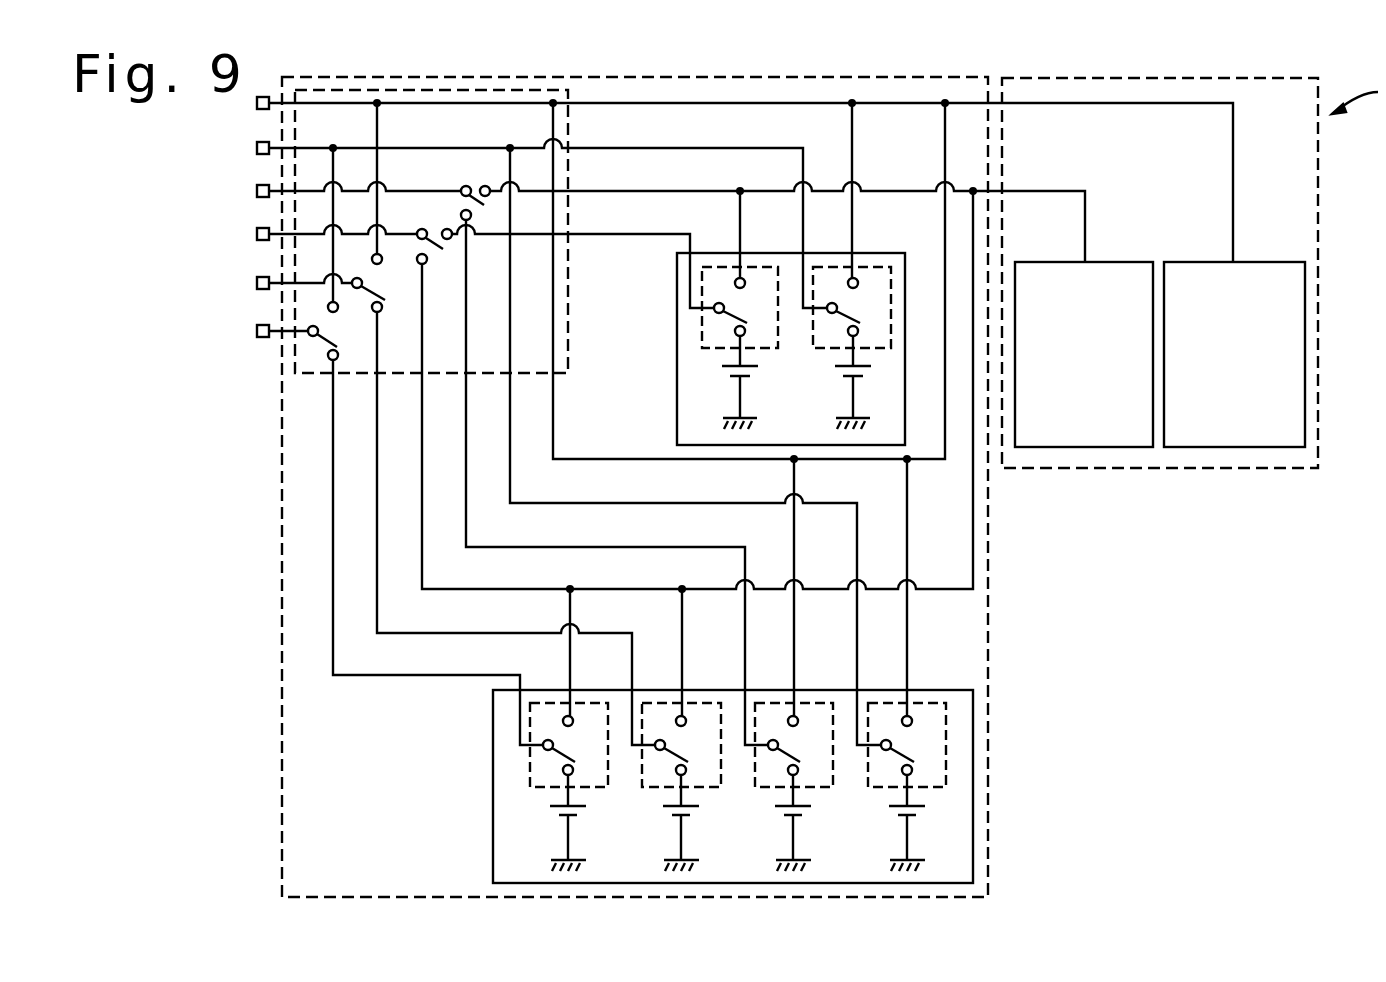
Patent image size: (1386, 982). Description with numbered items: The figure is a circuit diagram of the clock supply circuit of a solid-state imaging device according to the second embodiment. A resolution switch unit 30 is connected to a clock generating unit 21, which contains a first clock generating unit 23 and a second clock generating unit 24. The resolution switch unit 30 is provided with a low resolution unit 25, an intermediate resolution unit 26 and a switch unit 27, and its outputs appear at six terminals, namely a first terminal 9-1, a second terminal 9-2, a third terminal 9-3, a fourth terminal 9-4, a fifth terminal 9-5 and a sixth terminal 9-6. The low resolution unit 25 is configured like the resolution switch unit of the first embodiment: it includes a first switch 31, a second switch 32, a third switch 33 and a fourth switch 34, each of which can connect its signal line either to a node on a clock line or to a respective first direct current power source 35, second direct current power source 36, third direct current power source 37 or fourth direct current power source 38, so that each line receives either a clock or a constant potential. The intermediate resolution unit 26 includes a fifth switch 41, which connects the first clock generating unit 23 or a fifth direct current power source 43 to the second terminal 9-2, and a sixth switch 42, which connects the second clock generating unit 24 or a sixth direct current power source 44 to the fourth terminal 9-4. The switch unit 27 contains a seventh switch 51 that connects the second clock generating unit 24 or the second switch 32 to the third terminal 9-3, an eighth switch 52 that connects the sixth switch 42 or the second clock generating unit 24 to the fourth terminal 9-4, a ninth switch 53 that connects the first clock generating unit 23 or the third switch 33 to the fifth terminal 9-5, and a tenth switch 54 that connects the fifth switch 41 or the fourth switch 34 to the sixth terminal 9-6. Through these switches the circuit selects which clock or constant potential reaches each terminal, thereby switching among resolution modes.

The first terminal 9-1 is at (257, 103).
The second terminal 9-2 is at (257, 148).
The third terminal 9-3 is at (257, 191).
The fourth terminal 9-4 is at (257, 234).
The fifth terminal 9-5 is at (257, 283).
The sixth terminal 9-6 is at (257, 331).
The clock generating unit 21 is at (1172, 469).
The first clock generating unit 23 is at (1235, 447).
The second clock generating unit 24 is at (1085, 447).
The low resolution unit 25 is at (493, 787).
The intermediate resolution unit 26 is at (677, 348).
The switch unit 27 is at (568, 262).
The resolution switch unit 30 is at (988, 703).
The first switch 31 is at (930, 788).
The second switch 32 is at (817, 788).
The third switch 33 is at (705, 788).
The fourth switch 34 is at (592, 788).
The first direct current power source 35 is at (900, 813).
The second direct current power source 36 is at (787, 813).
The third direct current power source 37 is at (675, 813).
The fourth direct current power source 38 is at (562, 813).
The fifth switch 41 is at (875, 349).
The sixth switch 42 is at (762, 349).
The fifth direct current power source 43 is at (846, 375).
The sixth direct current power source 44 is at (733, 375).
The seventh switch 51 is at (461, 203).
The eighth switch 52 is at (426, 250).
The ninth switch 53 is at (368, 298).
The tenth switch 54 is at (326, 357).